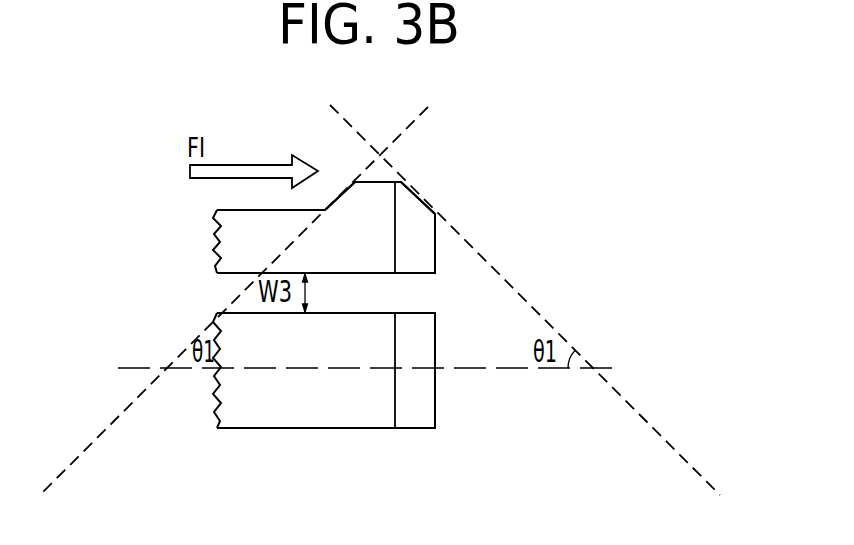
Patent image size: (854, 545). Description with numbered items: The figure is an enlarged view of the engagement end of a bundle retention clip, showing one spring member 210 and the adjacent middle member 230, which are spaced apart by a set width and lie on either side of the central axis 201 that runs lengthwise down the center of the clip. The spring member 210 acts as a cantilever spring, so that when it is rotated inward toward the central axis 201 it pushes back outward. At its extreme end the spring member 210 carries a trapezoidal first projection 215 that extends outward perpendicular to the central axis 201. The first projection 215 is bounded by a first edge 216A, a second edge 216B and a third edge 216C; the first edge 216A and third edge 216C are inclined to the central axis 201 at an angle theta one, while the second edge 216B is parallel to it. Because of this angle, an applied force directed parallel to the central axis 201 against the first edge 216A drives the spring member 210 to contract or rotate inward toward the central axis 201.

The central axis 201 is at (508, 370).
The spring member 210 is at (340, 278).
The first projection 215 is at (428, 152).
The first edge 216A is at (346, 210).
The second edge 216B is at (350, 190).
The third edge 216C is at (432, 198).
The middle member 230 is at (445, 105).